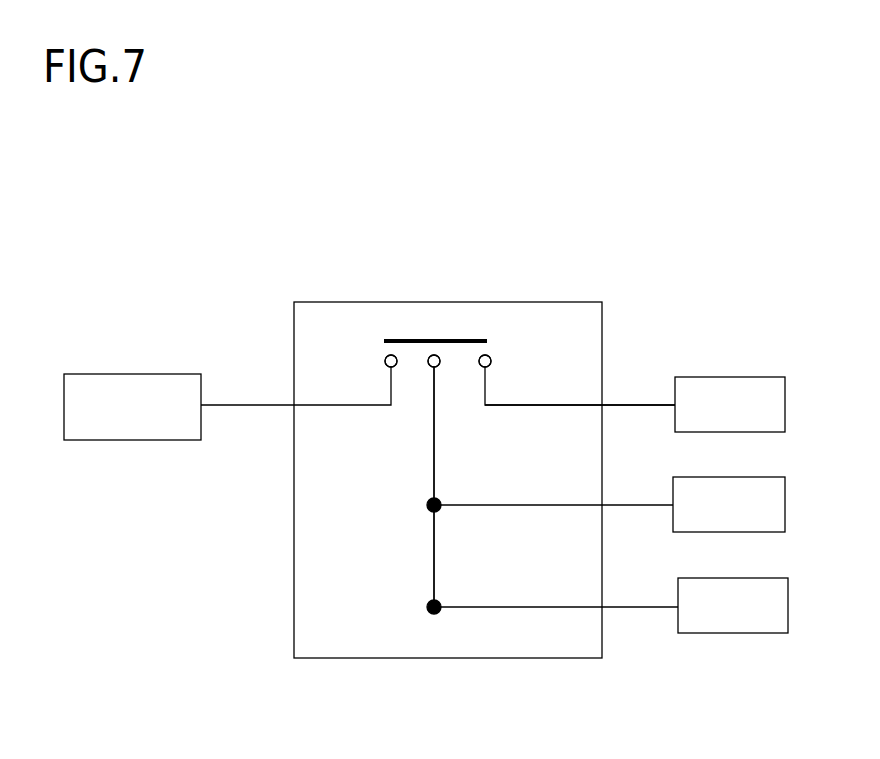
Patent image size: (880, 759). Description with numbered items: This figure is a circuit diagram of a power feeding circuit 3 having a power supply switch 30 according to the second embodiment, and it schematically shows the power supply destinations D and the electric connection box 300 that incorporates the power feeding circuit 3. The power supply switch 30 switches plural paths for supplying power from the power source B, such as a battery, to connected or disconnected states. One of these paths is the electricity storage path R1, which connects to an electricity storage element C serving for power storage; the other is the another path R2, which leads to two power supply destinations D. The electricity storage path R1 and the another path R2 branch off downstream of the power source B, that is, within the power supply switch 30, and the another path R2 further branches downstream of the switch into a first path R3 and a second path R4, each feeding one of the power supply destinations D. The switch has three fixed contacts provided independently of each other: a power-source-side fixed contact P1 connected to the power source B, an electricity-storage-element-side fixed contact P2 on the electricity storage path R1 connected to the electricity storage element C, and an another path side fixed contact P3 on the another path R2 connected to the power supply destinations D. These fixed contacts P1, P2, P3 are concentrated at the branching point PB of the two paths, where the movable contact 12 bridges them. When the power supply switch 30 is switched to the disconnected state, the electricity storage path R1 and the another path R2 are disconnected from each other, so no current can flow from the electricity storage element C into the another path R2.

The electric connection box 300 is at (334, 297).
The power feeding circuit 3 is at (422, 235).
The movable contact 12 is at (432, 337).
The branching point PB is at (442, 315).
The power supply switch 30 is at (455, 325).
The power source B is at (137, 374).
The power-source-side fixed contact P1 is at (387, 356).
The electricity-storage-element-side fixed contact P2 is at (484, 368).
The another path side fixed contact P3 is at (433, 370).
The electricity storage path R1 is at (560, 395).
The another path R2 is at (418, 458).
The first path R3 is at (610, 510).
The second path R4 is at (615, 612).
The electricity storage element C is at (727, 377).
The power supply destinations D is at (733, 532).